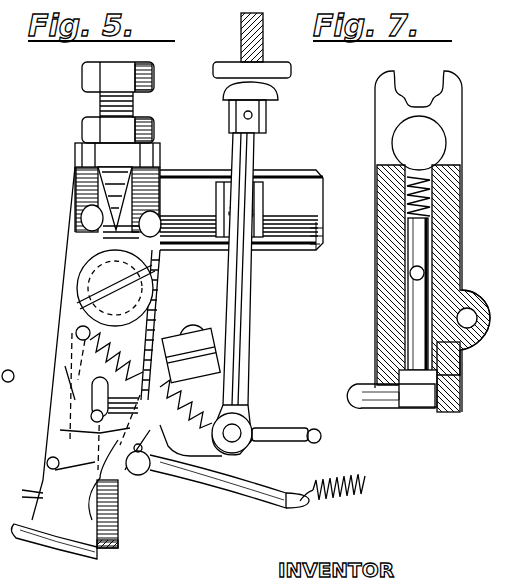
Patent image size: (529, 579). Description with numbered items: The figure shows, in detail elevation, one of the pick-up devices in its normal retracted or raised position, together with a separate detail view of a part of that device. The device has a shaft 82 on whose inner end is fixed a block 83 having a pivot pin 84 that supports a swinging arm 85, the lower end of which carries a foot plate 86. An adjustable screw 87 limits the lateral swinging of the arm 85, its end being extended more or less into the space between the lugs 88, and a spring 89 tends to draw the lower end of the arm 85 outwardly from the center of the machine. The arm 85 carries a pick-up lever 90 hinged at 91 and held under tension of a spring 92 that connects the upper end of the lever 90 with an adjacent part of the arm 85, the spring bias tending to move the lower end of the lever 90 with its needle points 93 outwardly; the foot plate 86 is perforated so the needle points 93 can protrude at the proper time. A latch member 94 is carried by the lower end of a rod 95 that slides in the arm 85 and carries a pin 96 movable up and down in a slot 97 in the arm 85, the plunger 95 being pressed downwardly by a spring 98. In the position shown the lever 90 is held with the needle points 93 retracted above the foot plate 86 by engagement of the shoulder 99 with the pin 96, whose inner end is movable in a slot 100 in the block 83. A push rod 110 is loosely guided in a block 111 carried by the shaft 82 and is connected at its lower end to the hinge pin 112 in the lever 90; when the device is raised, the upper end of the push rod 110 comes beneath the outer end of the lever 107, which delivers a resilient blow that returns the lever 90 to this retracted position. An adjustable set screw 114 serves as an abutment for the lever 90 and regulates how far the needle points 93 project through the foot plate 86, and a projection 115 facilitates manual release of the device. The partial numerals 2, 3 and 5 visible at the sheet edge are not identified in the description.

In FIG. 5, the partial numeral 2 is at (6, 143).
In FIG. 5, the screw 3 is at (48, 464).
In FIG. 5, the pin 5 is at (8, 369).
In FIG. 5, the shaft 82 is at (305, 183).
In FIG. 5, the block 83 is at (82, 172).
In FIG. 5, the pivot pin 84 is at (80, 283).
In FIG. 5, the swinging arm 85 is at (65, 366).
In FIG. 7, the swinging arm 85 is at (452, 352).
In FIG. 5, the foot plate 86 is at (107, 553).
In FIG. 7, the foot plate 86 is at (448, 412).
In FIG. 5, the adjustable screw 87 is at (100, 103).
In FIG. 5, the lugs 88 is at (90, 218).
In FIG. 7, the lugs 88 is at (449, 82).
In FIG. 5, the spring 89 is at (366, 488).
In FIG. 5, the pick-up lever 90 is at (92, 487).
In FIG. 5, the hinge 91 is at (152, 474).
In FIG. 5, the spring 92 is at (183, 390).
In FIG. 5, the needle points 93 is at (114, 531).
In FIG. 5, the latch member 94 is at (33, 553).
In FIG. 7, the latch member 94 is at (360, 390).
In FIG. 7, the rod 95 is at (424, 248).
In FIG. 5, the pin 96 is at (93, 415).
In FIG. 7, the pin 96 is at (411, 273).
In FIG. 5, the slot 97 is at (92, 384).
In FIG. 7, the spring 98 is at (436, 184).
In FIG. 5, the shoulder 99 is at (100, 433).
In FIG. 5, the slot 100 is at (86, 339).
In FIG. 5, the lever 107 is at (243, 40).
In FIG. 5, the push rod 110 is at (268, 108).
In FIG. 5, the block 111 is at (259, 256).
In FIG. 5, the hinge pin 112 is at (251, 428).
In FIG. 5, the adjustable set screw 114 is at (190, 328).
In FIG. 5, the projection 115 is at (319, 441).